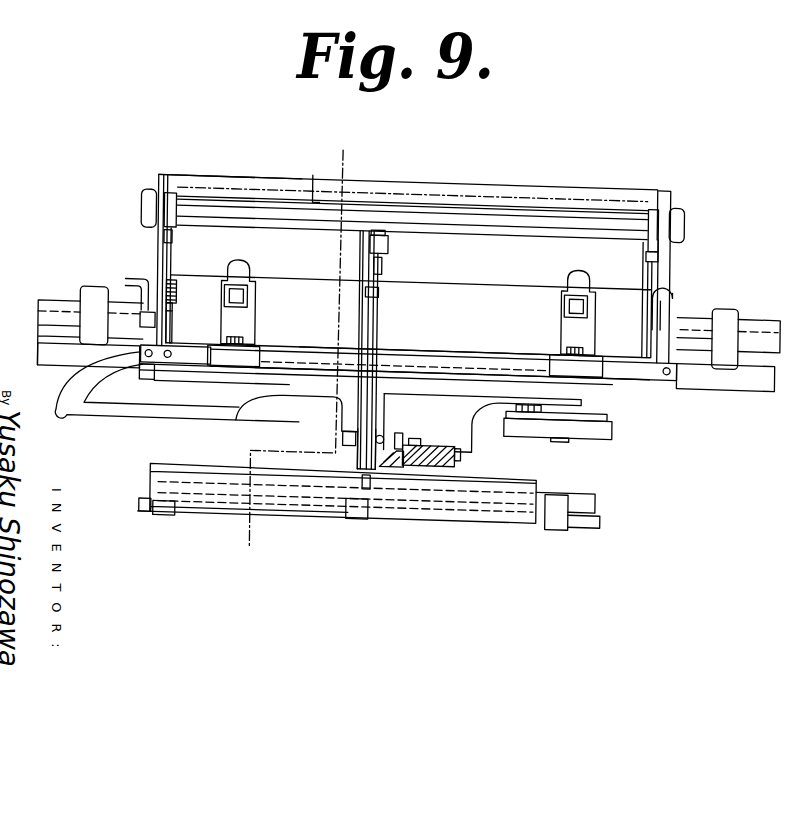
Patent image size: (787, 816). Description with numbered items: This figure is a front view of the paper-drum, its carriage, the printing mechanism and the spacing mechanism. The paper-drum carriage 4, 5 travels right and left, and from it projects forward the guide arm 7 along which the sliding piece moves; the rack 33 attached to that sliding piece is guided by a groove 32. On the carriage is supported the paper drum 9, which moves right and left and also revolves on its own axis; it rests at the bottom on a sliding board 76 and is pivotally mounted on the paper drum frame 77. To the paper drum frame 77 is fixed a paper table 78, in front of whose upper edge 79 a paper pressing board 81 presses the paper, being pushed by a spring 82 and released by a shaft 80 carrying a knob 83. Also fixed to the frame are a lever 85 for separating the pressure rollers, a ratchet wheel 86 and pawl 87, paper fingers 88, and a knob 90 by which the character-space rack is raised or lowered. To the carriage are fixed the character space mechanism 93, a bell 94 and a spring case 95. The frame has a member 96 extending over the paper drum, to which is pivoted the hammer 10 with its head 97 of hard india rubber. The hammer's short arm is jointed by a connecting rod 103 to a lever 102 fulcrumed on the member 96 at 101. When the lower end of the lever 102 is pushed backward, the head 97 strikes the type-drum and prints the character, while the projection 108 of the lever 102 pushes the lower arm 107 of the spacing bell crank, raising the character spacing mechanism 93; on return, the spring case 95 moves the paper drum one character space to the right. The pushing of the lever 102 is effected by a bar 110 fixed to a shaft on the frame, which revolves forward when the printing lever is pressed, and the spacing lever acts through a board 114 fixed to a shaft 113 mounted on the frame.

The paper-drum carriage 4 is at (408, 339).
The paper-drum carriage 5 is at (455, 395).
The guide arm 7 is at (432, 445).
The paper drum 9 is at (430, 328).
The hammer 10 is at (362, 152).
The groove 32 is at (428, 477).
The rack 33 is at (401, 432).
The sliding board 76 is at (162, 387).
The paper drum frame 77 is at (154, 260).
The paper table 78 is at (411, 293).
The upper edge 79 is at (167, 182).
The shaft 80 is at (311, 178).
The paper pressing board 81 is at (430, 190).
The spring 82 is at (176, 232).
The knob 83 is at (141, 221).
The lever 85 is at (673, 283).
The ratchet wheel 86 is at (176, 288).
The pawl 87 is at (173, 322).
The paper fingers 88 is at (248, 320).
The knob 90 is at (126, 287).
The character space mechanism 93 is at (363, 437).
The bell 94 is at (207, 397).
The spring case 95 is at (615, 412).
The member 96 is at (379, 294).
The head 97 is at (388, 238).
The fulcrum 101 is at (378, 405).
The lever 102 is at (379, 320).
The connecting rod 103 is at (382, 272).
The arm 107 is at (373, 462).
The projection 108 is at (380, 478).
The bar 110 is at (495, 477).
The shaft 113 is at (610, 511).
The board 114 is at (585, 488).